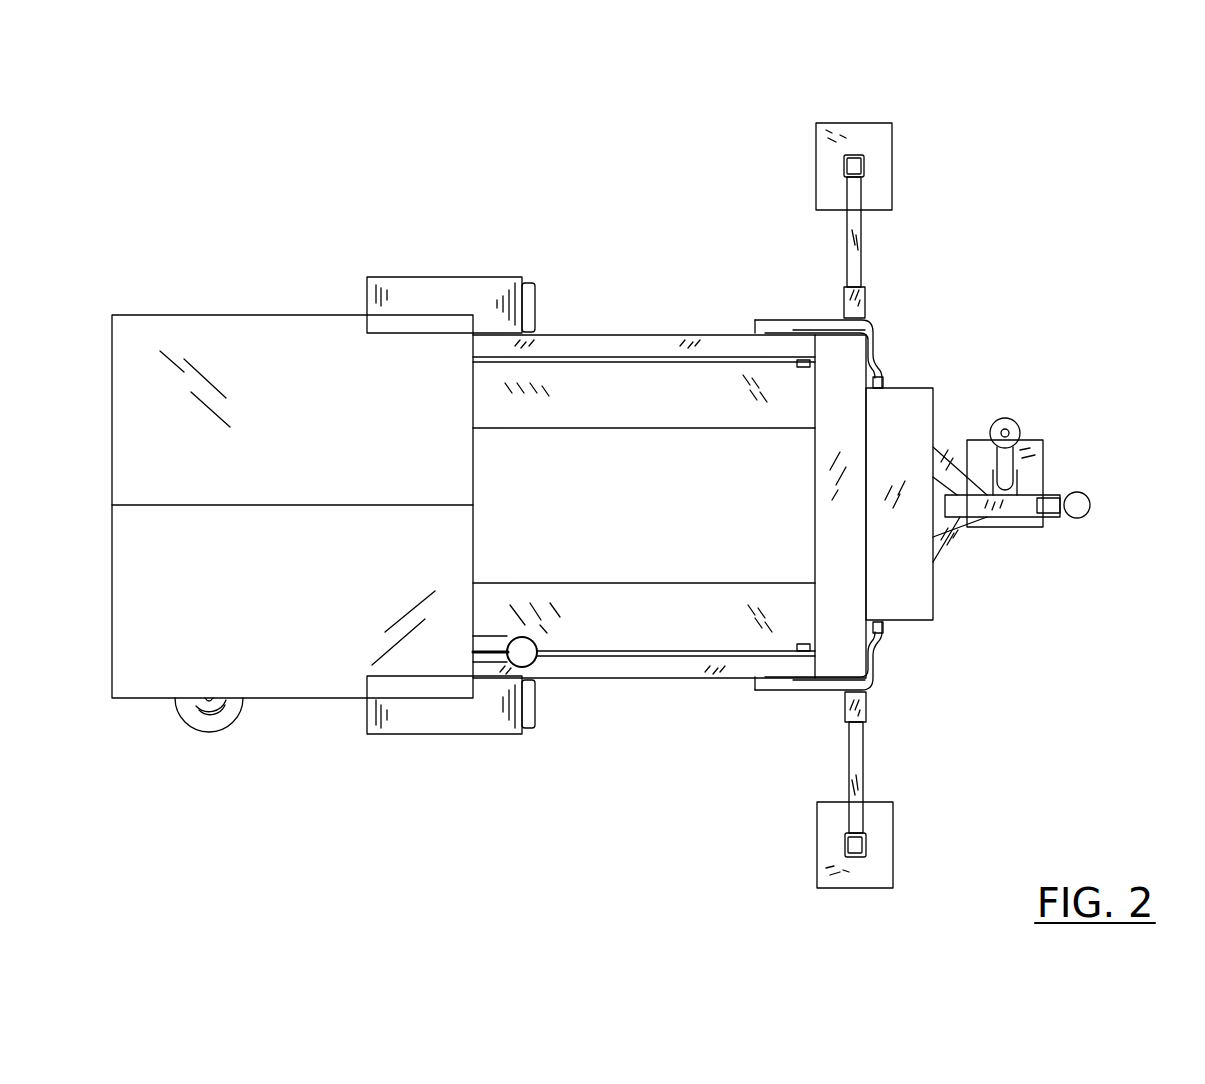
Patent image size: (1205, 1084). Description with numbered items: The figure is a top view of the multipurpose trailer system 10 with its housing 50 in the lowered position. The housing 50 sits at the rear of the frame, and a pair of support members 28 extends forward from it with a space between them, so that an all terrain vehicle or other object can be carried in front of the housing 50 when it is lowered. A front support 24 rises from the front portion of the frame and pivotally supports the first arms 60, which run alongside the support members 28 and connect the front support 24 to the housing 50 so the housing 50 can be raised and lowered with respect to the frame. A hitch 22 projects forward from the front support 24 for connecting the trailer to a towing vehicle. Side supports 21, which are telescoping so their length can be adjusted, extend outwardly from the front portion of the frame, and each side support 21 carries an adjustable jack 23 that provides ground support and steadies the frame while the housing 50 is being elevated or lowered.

The multipurpose trailer system 10 is at (1070, 128).
The side supports 21 is at (855, 270).
The hitch 22 is at (1022, 508).
The adjustable jack 23 is at (844, 166).
The front support 24 is at (850, 655).
The support members 28 is at (585, 415).
The housing 50 is at (245, 335).
The first arms 60 is at (617, 340).